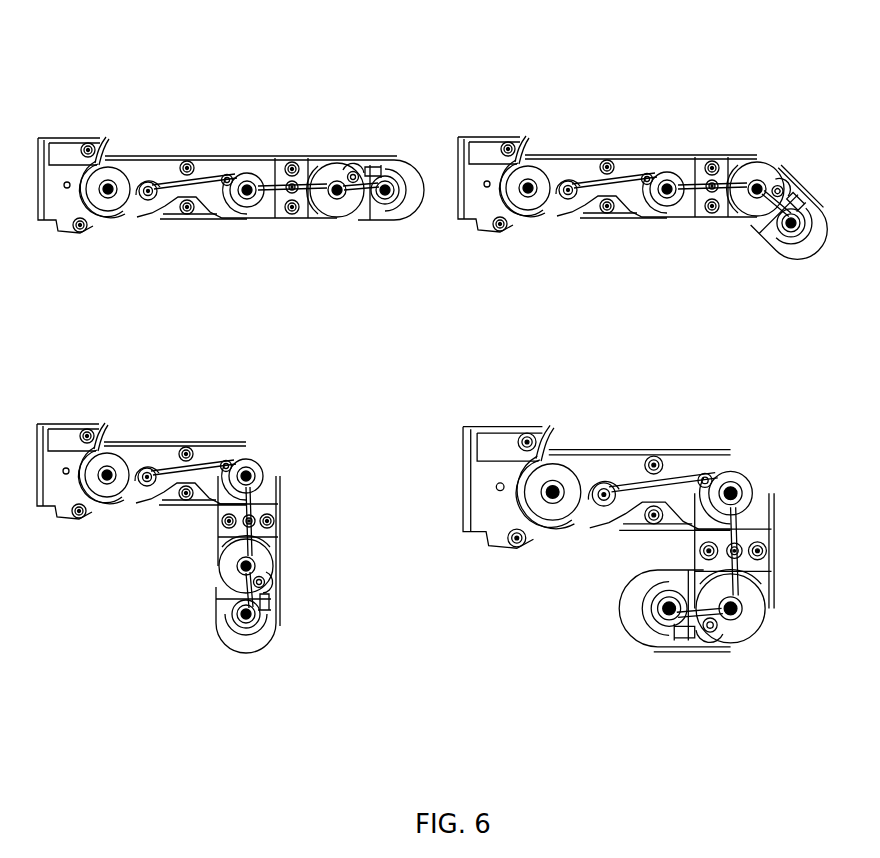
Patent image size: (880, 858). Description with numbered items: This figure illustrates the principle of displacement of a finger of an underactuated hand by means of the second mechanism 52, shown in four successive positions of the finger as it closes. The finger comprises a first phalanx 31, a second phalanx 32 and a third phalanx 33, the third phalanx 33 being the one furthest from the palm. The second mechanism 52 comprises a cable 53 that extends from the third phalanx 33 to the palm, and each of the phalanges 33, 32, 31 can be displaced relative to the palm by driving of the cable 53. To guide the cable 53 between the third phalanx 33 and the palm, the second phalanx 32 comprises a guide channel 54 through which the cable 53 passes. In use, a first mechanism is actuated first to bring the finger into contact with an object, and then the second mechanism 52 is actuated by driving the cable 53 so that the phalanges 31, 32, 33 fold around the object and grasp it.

The second mechanism 52 is at (101, 93).
The first phalanx 31 is at (149, 154).
The second phalanx 32 is at (285, 157).
The third phalanx 33 is at (384, 158).
The cable 53 is at (181, 194).
The guide channel 54 is at (301, 197).